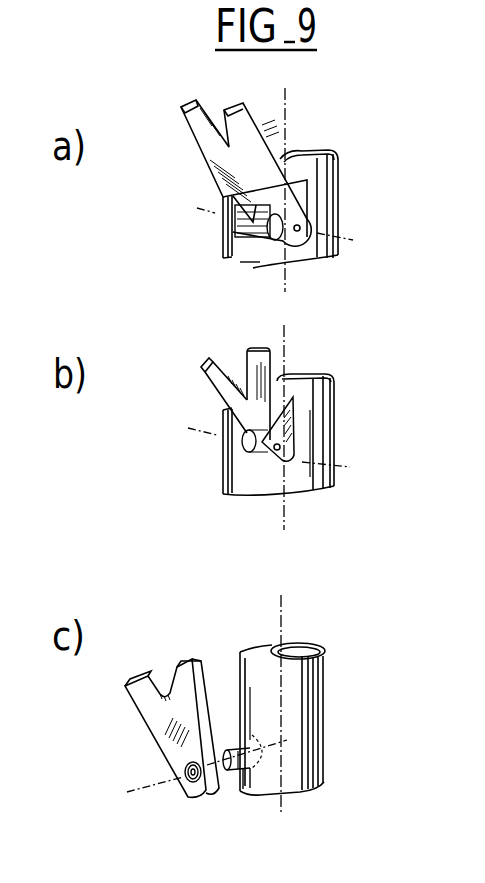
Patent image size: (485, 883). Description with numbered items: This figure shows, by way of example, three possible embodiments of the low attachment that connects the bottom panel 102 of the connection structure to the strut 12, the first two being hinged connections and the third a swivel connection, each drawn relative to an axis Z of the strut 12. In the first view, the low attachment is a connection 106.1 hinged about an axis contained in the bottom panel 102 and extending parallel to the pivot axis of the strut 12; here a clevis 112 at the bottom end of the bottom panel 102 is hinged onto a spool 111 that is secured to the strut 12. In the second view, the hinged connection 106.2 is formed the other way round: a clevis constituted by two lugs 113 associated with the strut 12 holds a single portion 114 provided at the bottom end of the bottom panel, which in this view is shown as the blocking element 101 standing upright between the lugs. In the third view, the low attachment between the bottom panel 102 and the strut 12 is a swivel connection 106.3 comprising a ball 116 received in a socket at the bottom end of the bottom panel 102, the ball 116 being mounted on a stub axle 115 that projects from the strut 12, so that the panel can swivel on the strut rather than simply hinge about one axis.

The strut 12 is at (332, 178).
The bottom panel 102 is at (213, 161).
The blocking element 101 is at (210, 390).
The spool 111 is at (258, 246).
The clevis 112 is at (298, 204).
The lugs 113 is at (289, 461).
The single portion 114 is at (240, 442).
The stub axle 115 is at (247, 790).
The ball 116 is at (183, 785).
The hinged connection 106.1 is at (204, 245).
The hinged connection 106.2 is at (210, 465).
The swivel connection 106.3 is at (265, 804).
The axis Z is at (285, 106).